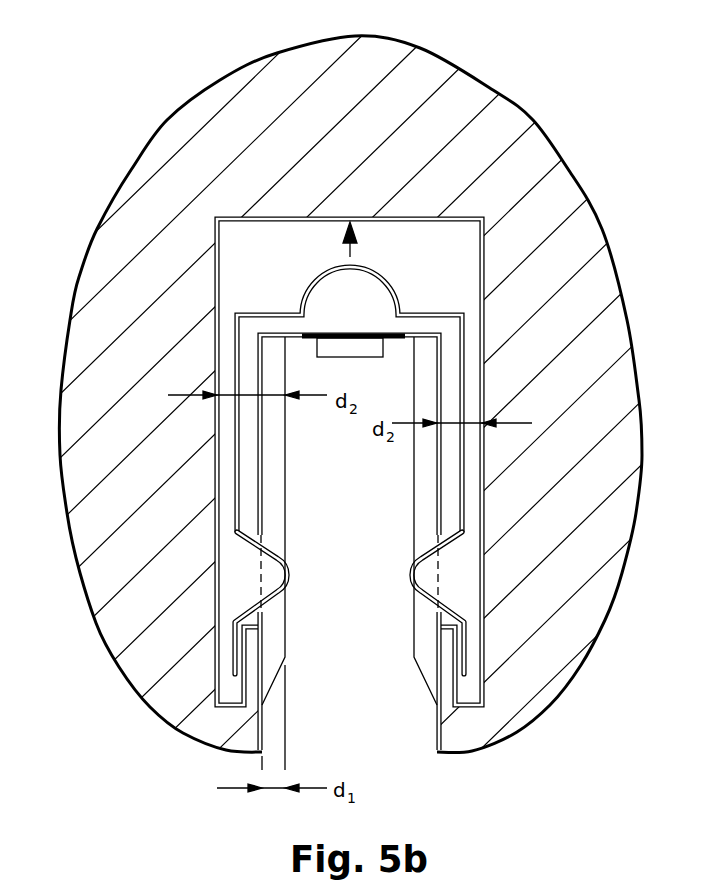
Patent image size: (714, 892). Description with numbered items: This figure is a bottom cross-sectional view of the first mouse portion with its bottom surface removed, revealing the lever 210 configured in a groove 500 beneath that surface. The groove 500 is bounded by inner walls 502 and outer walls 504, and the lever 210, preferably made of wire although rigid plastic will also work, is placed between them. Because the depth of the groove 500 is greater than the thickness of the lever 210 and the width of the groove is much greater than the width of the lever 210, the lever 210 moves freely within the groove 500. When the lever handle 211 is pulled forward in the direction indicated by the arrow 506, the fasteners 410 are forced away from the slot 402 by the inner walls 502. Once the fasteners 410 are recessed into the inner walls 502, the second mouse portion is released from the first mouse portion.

The lever 210 is at (432, 314).
The lever handle 211 is at (362, 345).
The slot 402 is at (365, 494).
The fasteners 410 is at (270, 549).
The groove 500 is at (291, 272).
The inner walls 502 is at (262, 452).
The outer walls 504 is at (455, 392).
The forward pull direction of lever handle 506 is at (351, 256).